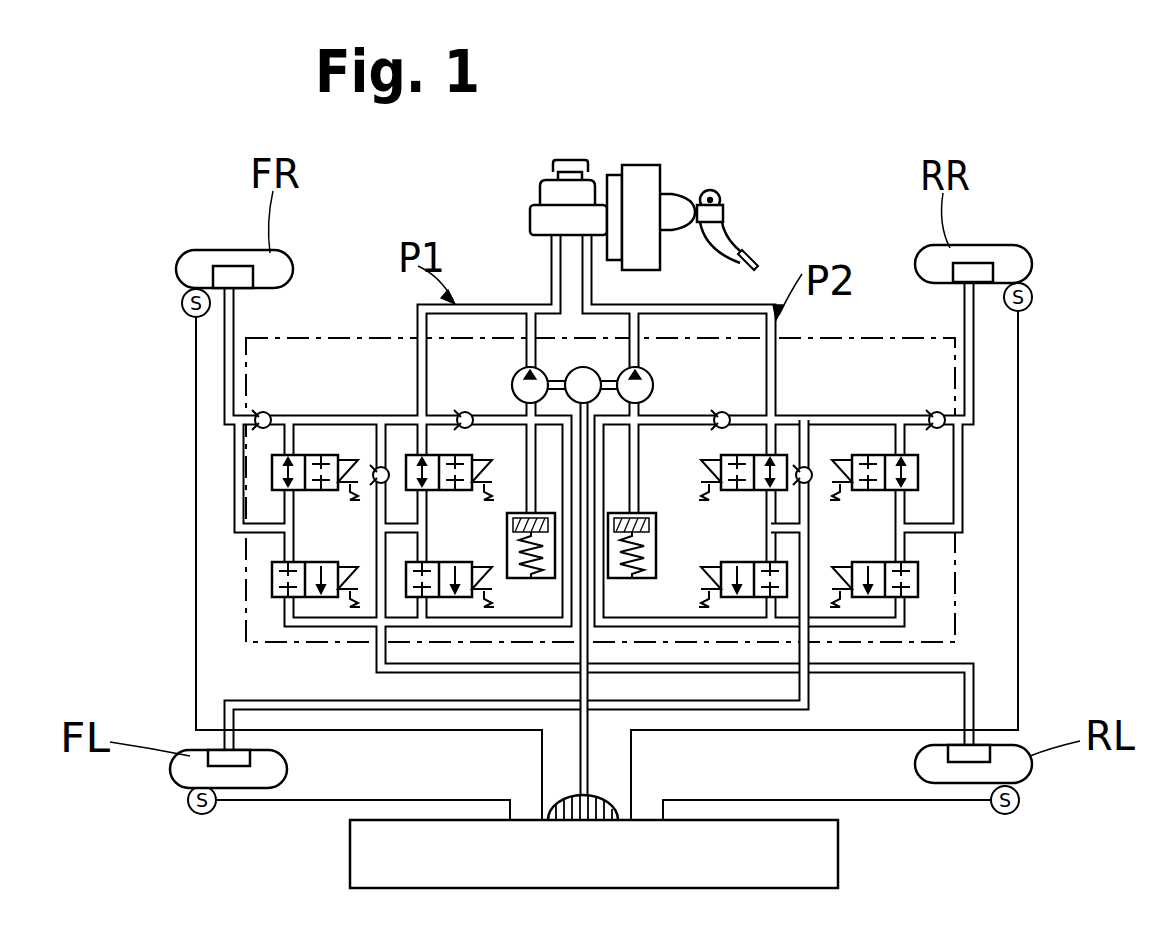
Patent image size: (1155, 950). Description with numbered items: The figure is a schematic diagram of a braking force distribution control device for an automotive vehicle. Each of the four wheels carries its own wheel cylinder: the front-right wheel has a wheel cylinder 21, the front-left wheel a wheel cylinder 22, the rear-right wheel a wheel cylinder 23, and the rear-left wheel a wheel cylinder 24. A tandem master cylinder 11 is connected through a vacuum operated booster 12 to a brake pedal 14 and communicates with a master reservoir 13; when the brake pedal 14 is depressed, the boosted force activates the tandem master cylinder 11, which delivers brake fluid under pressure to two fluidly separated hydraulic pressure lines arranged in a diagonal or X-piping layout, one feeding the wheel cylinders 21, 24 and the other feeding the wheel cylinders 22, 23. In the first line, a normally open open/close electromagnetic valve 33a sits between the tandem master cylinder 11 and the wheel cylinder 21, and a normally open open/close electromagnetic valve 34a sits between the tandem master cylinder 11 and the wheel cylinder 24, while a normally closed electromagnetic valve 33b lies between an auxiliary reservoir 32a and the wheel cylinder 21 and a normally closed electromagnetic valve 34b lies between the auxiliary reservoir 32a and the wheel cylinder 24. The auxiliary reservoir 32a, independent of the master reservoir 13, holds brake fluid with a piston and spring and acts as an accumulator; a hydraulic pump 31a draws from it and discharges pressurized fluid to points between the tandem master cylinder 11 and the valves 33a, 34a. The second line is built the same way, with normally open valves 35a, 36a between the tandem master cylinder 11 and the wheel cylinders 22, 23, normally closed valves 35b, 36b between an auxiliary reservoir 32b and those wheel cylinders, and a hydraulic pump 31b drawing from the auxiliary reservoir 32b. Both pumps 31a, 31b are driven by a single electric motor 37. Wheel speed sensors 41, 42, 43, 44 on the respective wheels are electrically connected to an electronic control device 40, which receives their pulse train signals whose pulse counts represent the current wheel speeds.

The tandem master cylinder 11 is at (540, 222).
The vacuum operated booster 12 is at (641, 178).
The master reservoir 13 is at (548, 185).
The brake pedal 14 is at (746, 262).
The wheel cylinder 21 is at (235, 272).
The wheel cylinder 22 is at (290, 765).
The wheel cylinder 23 is at (975, 268).
The wheel cylinder 24 is at (920, 768).
The hydraulic pump 31a is at (513, 380).
The hydraulic pump 31b is at (654, 380).
The auxiliary reservoir 32a is at (520, 578).
The auxiliary reservoir 32b is at (641, 578).
The normally open open/close electromagnetic valve 33a is at (280, 456).
The normally closed open/close electromagnetic valve 33b is at (280, 563).
The normally open open/close electromagnetic valve 34a is at (425, 455).
The normally closed open/close electromagnetic valve 34b is at (450, 542).
The normally open open/close electromagnetic valve 35a is at (748, 455).
The normally closed open/close electromagnetic valve 35b is at (745, 562).
The normally open open/close electromagnetic valve 36a is at (868, 455).
The normally closed open/close electromagnetic valve 36b is at (905, 561).
The electric motor 37 is at (576, 367).
The electronic control device 40 is at (840, 876).
The wheel speed sensor 41 is at (182, 308).
The wheel speed sensor 42 is at (212, 812).
The wheel speed sensor 43 is at (1032, 296).
The wheel speed sensor 44 is at (998, 812).